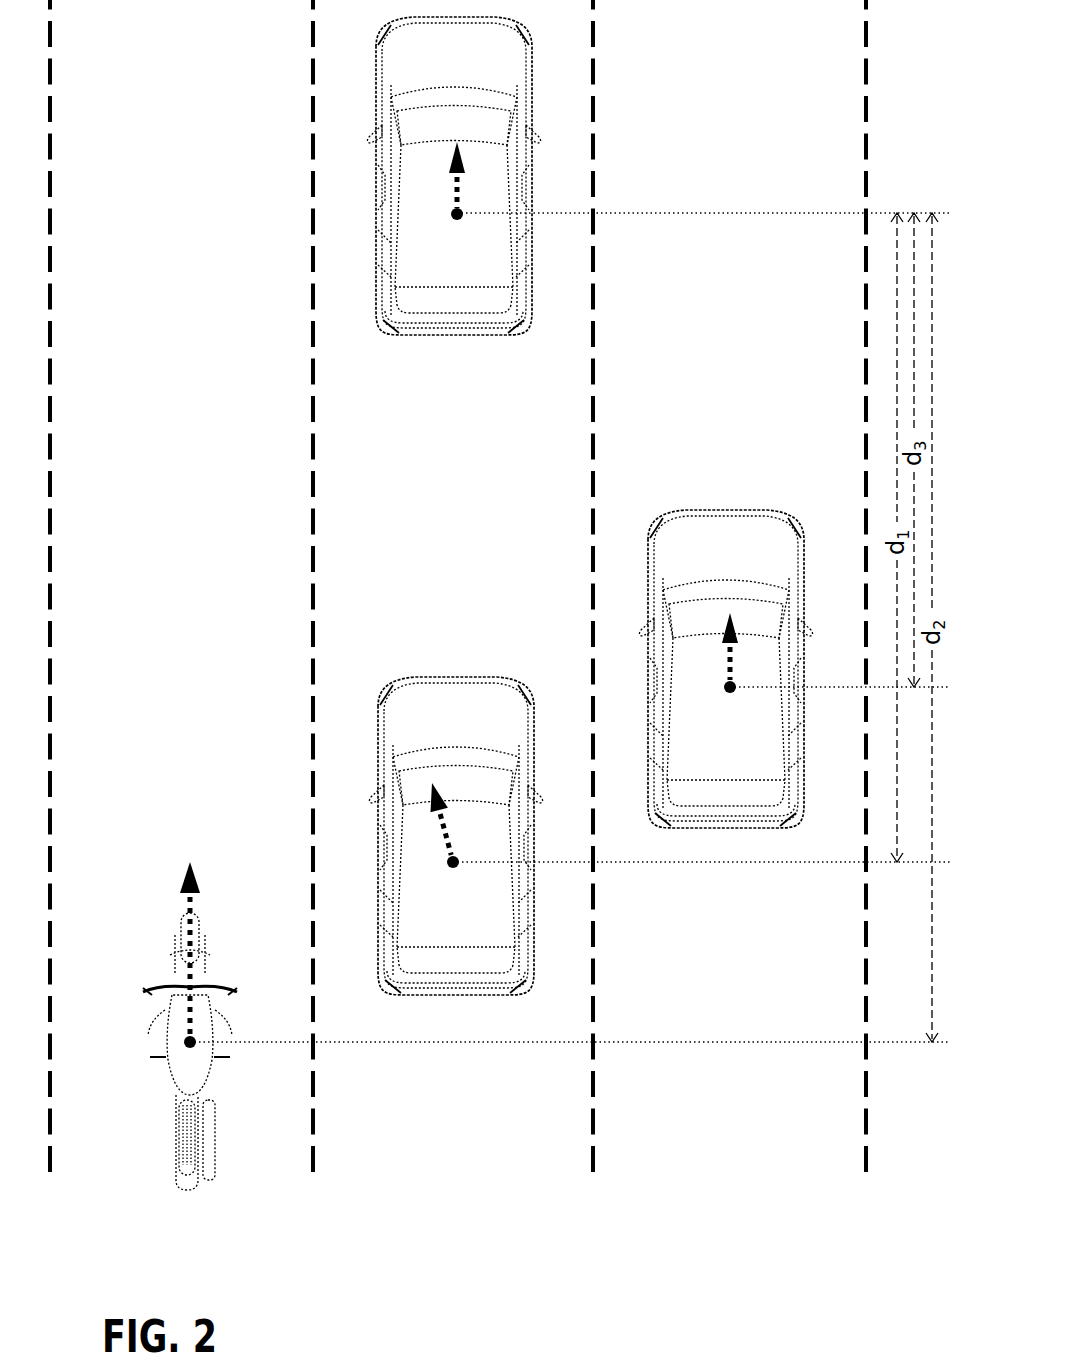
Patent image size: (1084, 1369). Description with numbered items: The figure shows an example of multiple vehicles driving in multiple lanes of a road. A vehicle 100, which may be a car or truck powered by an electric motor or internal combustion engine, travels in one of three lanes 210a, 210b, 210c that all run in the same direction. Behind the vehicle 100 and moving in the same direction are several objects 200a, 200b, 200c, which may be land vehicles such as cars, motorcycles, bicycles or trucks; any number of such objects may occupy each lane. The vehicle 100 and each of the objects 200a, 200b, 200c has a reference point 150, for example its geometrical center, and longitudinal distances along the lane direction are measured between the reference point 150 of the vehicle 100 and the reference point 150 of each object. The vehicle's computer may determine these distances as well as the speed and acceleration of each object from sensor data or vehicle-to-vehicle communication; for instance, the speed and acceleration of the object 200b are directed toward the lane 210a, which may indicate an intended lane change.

The vehicle 100 is at (453, 176).
The reference point 150 is at (450, 211).
The object 200a is at (176, 1172).
The object 200b is at (455, 836).
The object 200c is at (725, 669).
The lane 210a is at (181, 586).
The lane 210b is at (509, 586).
The lane 210c is at (790, 586).